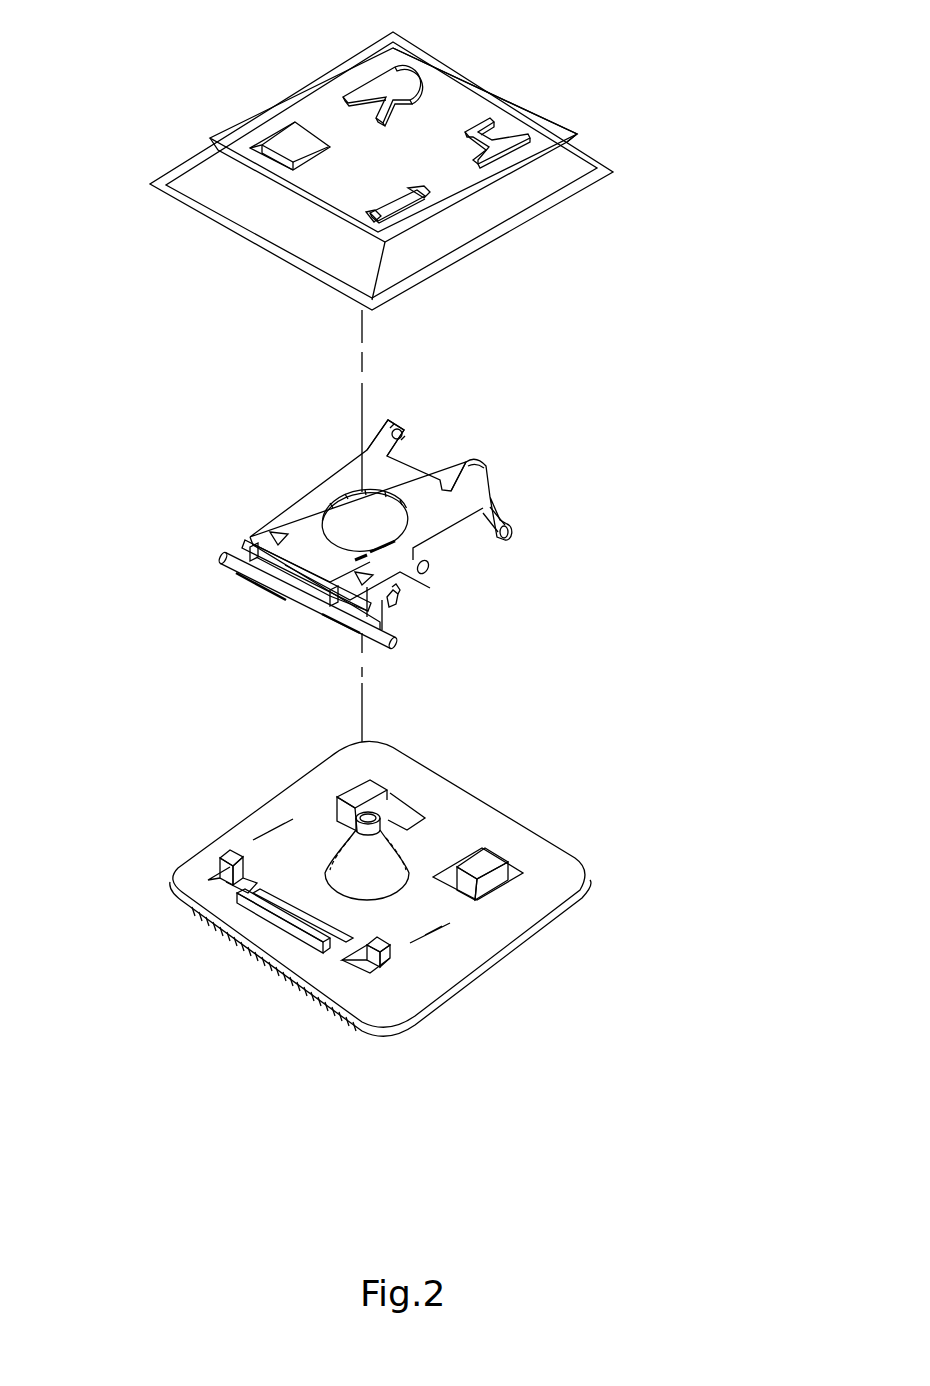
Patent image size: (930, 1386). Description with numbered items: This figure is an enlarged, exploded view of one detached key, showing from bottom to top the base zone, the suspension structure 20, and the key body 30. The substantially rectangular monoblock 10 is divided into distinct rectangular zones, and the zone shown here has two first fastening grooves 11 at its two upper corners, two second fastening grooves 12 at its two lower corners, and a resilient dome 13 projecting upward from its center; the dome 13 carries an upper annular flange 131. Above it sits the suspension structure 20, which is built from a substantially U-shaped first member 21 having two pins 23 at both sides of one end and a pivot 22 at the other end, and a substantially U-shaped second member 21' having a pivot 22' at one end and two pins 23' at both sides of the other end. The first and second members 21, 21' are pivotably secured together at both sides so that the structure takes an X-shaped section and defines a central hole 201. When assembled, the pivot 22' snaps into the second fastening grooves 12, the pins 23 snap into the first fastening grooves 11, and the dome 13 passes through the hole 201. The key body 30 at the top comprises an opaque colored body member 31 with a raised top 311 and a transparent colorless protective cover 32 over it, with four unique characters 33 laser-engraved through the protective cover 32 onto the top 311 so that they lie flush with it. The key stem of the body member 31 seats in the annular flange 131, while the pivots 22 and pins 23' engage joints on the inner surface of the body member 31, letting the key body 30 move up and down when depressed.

The monoblock 10 is at (480, 940).
The first fastening grooves 11 is at (500, 877).
The second fastening grooves 12 is at (373, 962).
The resilient dome 13 is at (390, 857).
The annular flange 131 is at (360, 806).
The suspension structure 20 is at (218, 434).
The central hole 201 is at (347, 526).
The first member 21 is at (389, 525).
The second member 21' is at (440, 613).
The pivot 22 is at (281, 552).
The pivot 22' is at (340, 624).
The pins 23 is at (512, 506).
The pins 23' is at (415, 409).
The key body 30 is at (232, 112).
The body member 31 is at (552, 178).
The raised top 311 is at (490, 89).
The protective cover 32 is at (508, 223).
The characters 33 is at (412, 78).